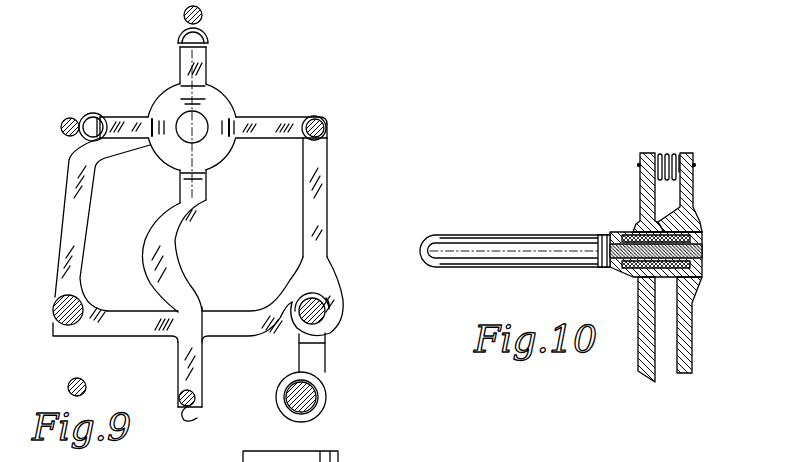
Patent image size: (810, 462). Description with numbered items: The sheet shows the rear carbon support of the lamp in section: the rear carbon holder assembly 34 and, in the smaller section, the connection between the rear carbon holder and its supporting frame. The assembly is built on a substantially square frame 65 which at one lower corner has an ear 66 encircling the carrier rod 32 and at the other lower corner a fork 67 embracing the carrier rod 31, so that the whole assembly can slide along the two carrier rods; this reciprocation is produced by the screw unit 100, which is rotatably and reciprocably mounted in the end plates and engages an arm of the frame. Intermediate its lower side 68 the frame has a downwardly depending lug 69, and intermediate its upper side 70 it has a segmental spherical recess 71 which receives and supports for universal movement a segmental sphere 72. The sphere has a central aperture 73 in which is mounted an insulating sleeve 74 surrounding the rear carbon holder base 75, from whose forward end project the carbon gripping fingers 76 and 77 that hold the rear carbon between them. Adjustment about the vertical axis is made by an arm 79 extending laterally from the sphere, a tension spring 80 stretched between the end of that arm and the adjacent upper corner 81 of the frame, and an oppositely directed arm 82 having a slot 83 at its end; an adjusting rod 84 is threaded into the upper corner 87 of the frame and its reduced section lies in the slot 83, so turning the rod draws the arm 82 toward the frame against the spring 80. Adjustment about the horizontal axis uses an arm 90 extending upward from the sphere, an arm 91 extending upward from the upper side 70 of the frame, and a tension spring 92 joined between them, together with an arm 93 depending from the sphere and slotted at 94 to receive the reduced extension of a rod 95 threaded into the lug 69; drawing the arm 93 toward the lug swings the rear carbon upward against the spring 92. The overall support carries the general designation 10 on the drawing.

In FIG. 9, the support bracket / frame member 10 is at (203, 27).
In FIG. 9, the tension spring 92 is at (208, 36).
In FIG. 10, the tension spring 92 is at (672, 153).
In FIG. 9, the arm 90 is at (202, 66).
In FIG. 10, the arm 90 is at (694, 182).
In FIG. 10, the arm 91 is at (640, 178).
In FIG. 9, the tension spring 80 is at (93, 114).
In FIG. 9, the arm 79 is at (118, 126).
In FIG. 9, the arm 82 is at (250, 122).
In FIG. 9, the upper side 70 is at (280, 117).
In FIG. 9, the upper corner 87 is at (313, 118).
In FIG. 9, the adjusting rod 84 is at (323, 120).
In FIG. 9, the slot 83 is at (328, 127).
In FIG. 9, the upper corner 81 is at (85, 150).
In FIG. 9, the rear carbon holder assembly 34 is at (57, 198).
In FIG. 9, the frame 65 is at (337, 208).
In FIG. 9, the arm 93 is at (146, 252).
In FIG. 9, the carrier rod 31 is at (54, 309).
In FIG. 9, the fork 67 is at (62, 330).
In FIG. 9, the lug 69 is at (176, 358).
In FIG. 9, the lower side 68 is at (240, 328).
In FIG. 9, the carrier rod 32 is at (336, 302).
In FIG. 9, the ear 66 is at (330, 312).
In FIG. 9, the rod 95 is at (197, 398).
In FIG. 9, the slot 94 is at (198, 420).
In FIG. 9, the screw unit 100 is at (305, 403).
In FIG. 10, the carbon gripping finger 76 is at (490, 243).
In FIG. 10, the carbon gripping finger 77 is at (453, 255).
In FIG. 10, the aperture 73 is at (703, 236).
In FIG. 10, the insulating sleeve 74 is at (690, 236).
In FIG. 10, the rear carbon holder base 75 is at (700, 249).
In FIG. 10, the segmental spherical recess 71 is at (643, 228).
In FIG. 10, the segmental sphere 72 is at (637, 278).